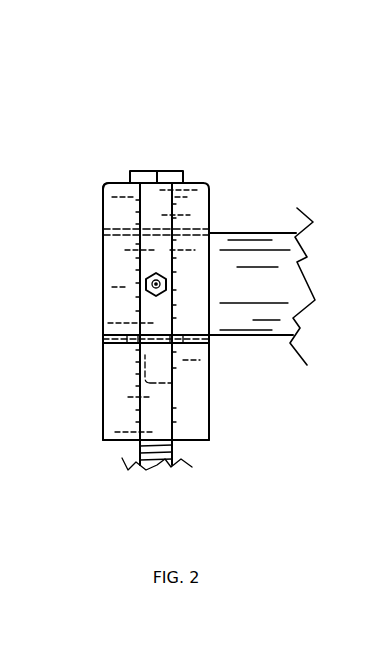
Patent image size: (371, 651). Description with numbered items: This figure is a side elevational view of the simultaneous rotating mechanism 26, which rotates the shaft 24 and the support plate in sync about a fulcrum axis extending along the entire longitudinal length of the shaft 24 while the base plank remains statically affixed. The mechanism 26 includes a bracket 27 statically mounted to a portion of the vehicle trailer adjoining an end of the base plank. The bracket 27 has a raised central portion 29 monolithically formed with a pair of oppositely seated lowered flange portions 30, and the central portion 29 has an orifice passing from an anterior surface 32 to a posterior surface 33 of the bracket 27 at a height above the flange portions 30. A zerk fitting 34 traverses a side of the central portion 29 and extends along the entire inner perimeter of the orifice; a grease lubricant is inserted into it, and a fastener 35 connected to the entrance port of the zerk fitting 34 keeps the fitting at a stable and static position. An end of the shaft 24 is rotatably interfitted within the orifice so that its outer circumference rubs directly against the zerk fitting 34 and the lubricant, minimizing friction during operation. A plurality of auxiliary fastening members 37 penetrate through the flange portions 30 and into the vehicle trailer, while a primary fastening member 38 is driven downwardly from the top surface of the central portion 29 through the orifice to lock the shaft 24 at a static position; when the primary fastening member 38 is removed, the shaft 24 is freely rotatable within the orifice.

The shaft 24 is at (270, 233).
The simultaneous rotating mechanism 26 is at (204, 184).
The bracket 27 is at (209, 440).
The raised central portion 29 is at (110, 183).
The lowered flange portions 30 is at (0, 367).
The anterior surface 32 is at (211, 191).
The posterior surface 33 is at (103, 218).
The zerk fitting 34 is at (150, 292).
The fastener 35 is at (146, 276).
The auxiliary fastening members 37 is at (0, 74).
The primary fastening member 38 is at (145, 171).